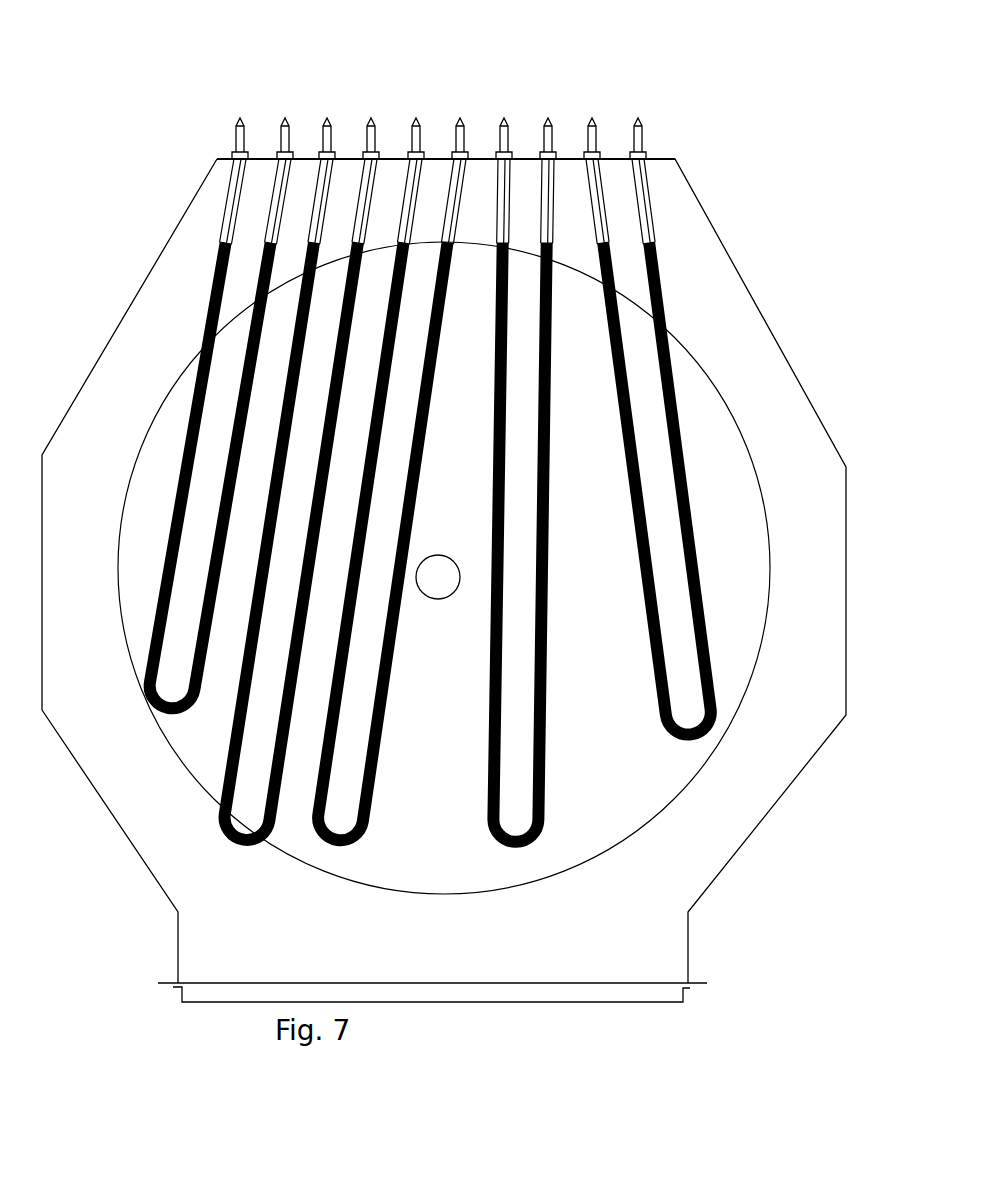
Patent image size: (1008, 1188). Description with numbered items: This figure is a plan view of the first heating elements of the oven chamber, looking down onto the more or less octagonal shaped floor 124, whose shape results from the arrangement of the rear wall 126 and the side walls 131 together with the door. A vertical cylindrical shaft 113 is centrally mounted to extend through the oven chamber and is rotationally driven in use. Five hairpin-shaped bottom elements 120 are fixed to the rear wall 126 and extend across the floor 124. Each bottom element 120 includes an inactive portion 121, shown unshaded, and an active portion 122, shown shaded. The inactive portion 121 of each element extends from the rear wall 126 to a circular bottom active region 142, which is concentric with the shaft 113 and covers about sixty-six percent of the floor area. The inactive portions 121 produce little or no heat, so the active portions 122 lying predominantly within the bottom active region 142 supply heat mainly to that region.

The vertical cylindrical shaft 113 is at (432, 598).
The bottom elements 120 is at (672, 246).
The inactive portion 121 is at (603, 208).
The active portion 122 is at (410, 481).
The floor 124 is at (762, 757).
The rear wall 126 is at (576, 170).
The side walls 131 is at (42, 507).
The bottom active region 142 is at (710, 387).